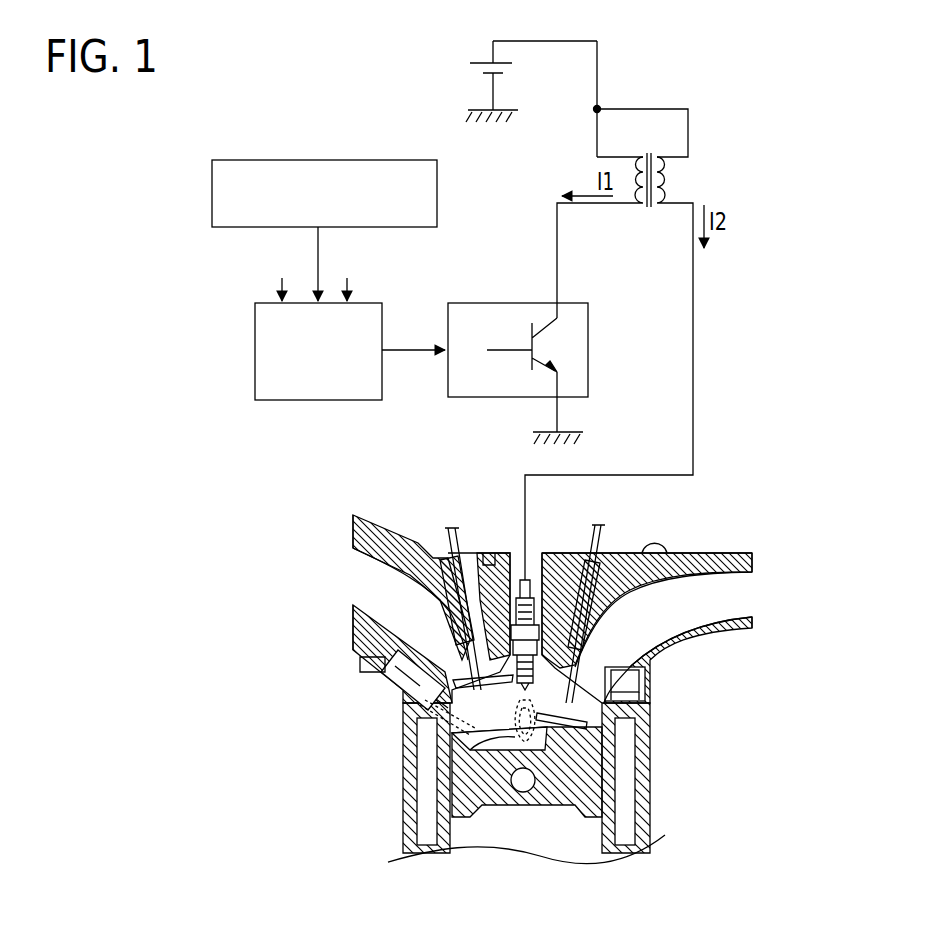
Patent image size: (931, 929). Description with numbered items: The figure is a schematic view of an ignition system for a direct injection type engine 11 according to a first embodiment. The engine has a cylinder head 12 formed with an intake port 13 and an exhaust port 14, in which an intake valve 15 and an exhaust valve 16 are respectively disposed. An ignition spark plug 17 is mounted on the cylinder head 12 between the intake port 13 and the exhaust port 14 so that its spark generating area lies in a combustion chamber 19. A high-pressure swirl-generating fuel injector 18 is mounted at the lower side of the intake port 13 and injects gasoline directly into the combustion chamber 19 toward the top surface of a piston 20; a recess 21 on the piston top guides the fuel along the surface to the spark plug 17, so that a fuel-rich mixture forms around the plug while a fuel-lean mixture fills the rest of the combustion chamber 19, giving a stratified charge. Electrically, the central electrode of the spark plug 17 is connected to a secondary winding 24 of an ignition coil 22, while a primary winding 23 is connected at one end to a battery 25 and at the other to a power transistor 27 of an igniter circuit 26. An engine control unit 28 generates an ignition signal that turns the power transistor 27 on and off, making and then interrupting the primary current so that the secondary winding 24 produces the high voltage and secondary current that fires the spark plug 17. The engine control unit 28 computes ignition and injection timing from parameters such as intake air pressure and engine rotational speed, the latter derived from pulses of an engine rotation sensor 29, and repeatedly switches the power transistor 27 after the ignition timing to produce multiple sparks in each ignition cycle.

The direct injection type engine 11 is at (653, 727).
The cylinder head 12 is at (552, 553).
The intake port 13 is at (382, 592).
The exhaust port 14 is at (602, 635).
The intake valve 15 is at (437, 570).
The exhaust valve 16 is at (593, 702).
The ignition spark plug 17 is at (528, 580).
The fuel injector 18 is at (402, 670).
The combustion chamber 19 is at (480, 702).
The piston 20 is at (525, 781).
The recess 21 is at (480, 745).
The ignition coil 22 is at (649, 310).
The primary winding 23 is at (628, 168).
The secondary winding 24 is at (678, 179).
The battery 25 is at (470, 63).
The igniter circuit 26 is at (518, 348).
The power transistor 27 is at (530, 356).
The engine control unit 28 is at (292, 400).
The engine rotation sensor 29 is at (262, 160).